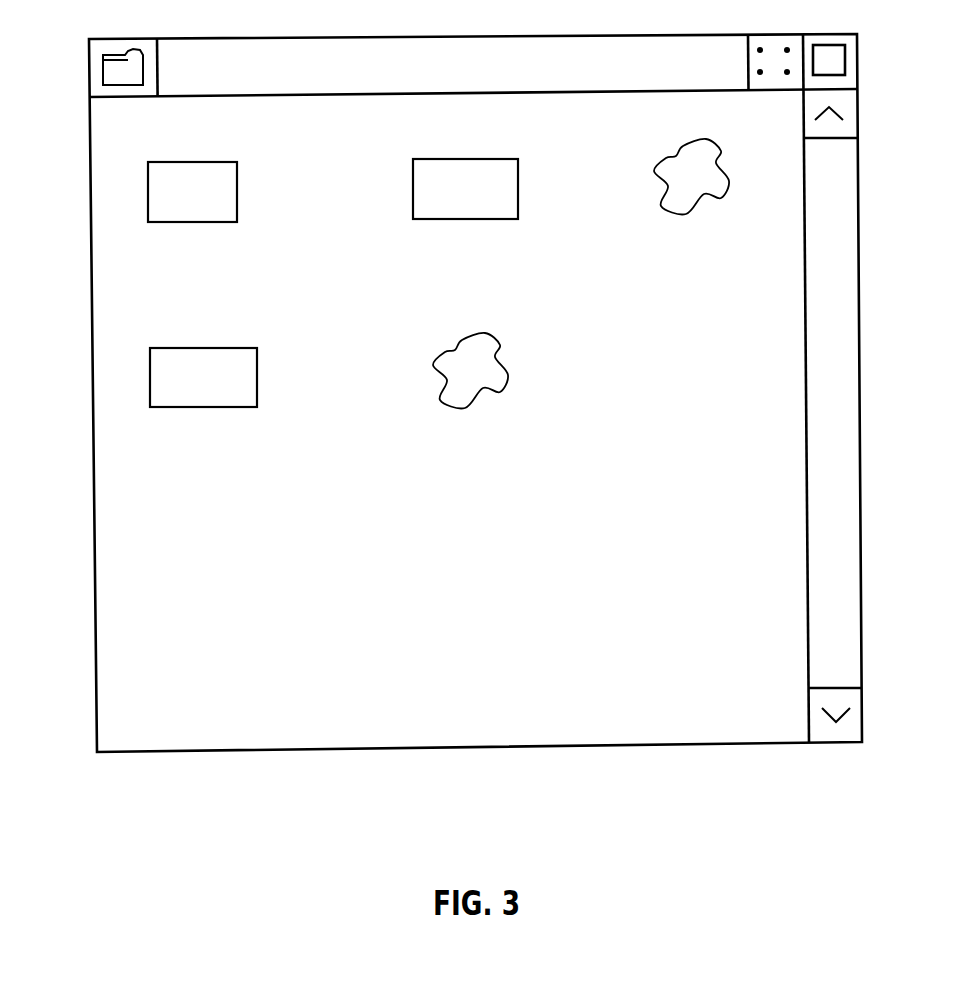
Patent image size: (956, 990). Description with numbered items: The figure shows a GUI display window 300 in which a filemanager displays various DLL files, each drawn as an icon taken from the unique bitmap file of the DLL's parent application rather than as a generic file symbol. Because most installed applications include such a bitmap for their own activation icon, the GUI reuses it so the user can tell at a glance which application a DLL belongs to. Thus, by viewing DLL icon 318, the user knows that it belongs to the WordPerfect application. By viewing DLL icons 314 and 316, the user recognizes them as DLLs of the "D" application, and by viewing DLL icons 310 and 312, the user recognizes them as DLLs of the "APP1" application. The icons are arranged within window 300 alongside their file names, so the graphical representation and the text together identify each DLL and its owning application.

The window 300 is at (694, 797).
The DLL icon 310 is at (158, 375).
The DLL icon 312 is at (497, 172).
The DLL icon 314 is at (722, 190).
The DLL icon 316 is at (505, 375).
The DLL icon 318 is at (157, 191).